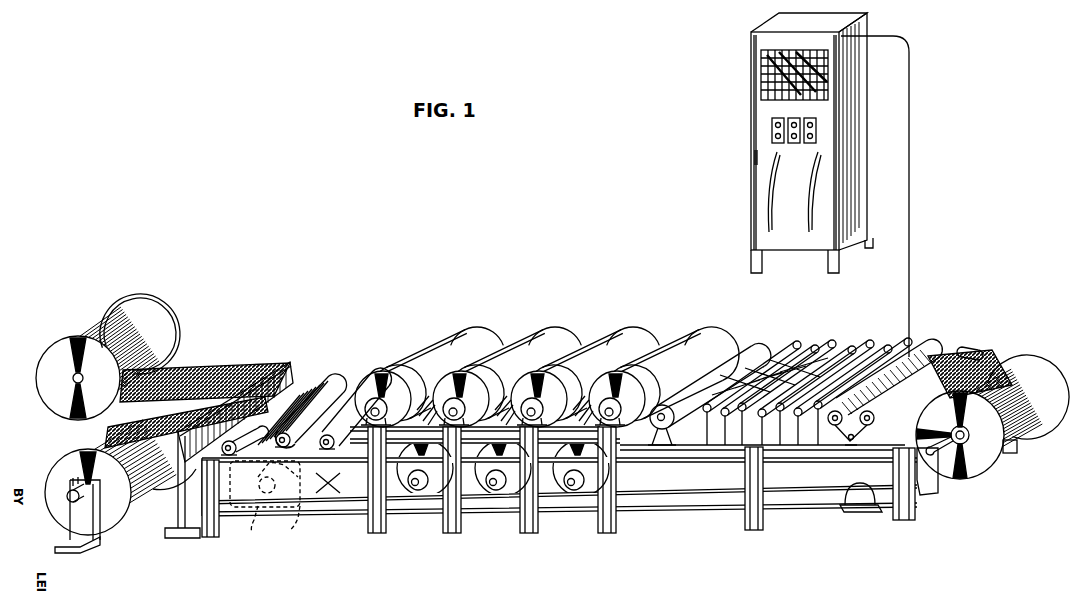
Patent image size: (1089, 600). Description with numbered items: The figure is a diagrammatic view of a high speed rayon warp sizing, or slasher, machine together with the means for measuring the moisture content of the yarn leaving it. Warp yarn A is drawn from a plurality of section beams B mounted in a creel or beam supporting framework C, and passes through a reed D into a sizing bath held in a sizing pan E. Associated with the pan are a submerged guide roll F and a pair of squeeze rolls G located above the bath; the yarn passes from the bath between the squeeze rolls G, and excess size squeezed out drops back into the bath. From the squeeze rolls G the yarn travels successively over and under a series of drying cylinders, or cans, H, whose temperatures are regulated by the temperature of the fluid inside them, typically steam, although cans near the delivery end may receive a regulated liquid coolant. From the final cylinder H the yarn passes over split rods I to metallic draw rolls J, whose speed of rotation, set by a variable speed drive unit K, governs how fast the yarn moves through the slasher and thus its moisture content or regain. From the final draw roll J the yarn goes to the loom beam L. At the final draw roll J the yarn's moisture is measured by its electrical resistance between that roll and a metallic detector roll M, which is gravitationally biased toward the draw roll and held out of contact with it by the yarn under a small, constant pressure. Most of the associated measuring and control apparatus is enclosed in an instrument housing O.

The warp yarn A is at (194, 378).
The section beams B is at (70, 453).
The creel or beam supporting framework C is at (68, 539).
The reed D is at (273, 370).
The sizing pan E is at (333, 482).
The submerged guide roll F is at (254, 520).
The squeeze rolls G is at (353, 378).
The drying cylinders or cans H is at (536, 318).
The split rods I is at (903, 343).
The metallic draw rolls J is at (960, 348).
The variable speed drive unit K is at (853, 498).
The loom beam L is at (1027, 353).
The metallic detector roll M is at (927, 354).
The instrument housing O is at (752, 108).